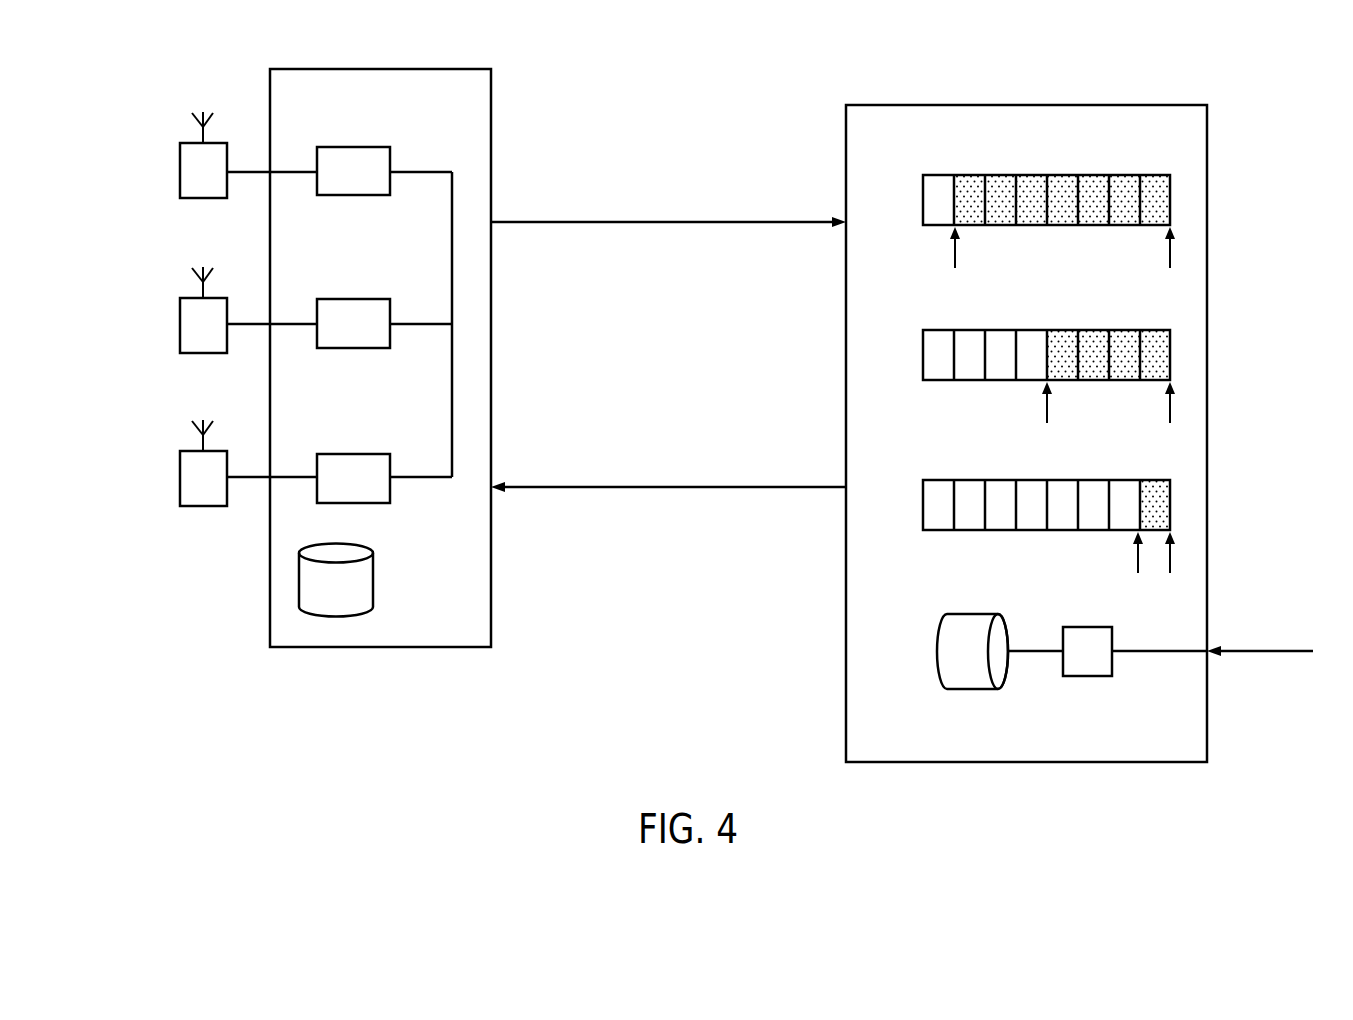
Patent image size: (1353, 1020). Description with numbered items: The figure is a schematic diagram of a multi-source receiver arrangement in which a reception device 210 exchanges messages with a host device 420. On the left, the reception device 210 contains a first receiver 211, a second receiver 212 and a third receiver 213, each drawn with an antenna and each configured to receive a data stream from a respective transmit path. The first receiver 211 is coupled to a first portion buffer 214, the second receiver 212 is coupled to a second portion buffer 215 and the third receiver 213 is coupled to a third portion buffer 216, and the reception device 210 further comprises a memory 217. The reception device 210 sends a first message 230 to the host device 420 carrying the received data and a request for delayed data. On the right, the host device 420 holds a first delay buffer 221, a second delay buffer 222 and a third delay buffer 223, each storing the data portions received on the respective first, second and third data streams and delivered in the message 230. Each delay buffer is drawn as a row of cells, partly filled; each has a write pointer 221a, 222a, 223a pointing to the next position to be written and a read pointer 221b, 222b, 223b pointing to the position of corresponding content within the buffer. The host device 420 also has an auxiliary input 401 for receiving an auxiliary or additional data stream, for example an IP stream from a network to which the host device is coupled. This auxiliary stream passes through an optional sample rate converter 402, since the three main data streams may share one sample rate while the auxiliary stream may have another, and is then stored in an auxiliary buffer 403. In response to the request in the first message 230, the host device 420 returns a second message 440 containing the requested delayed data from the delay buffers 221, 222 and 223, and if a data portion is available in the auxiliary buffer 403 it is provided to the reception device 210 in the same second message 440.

The reception device 210 is at (380, 69).
The first receiver 211 is at (180, 172).
The second receiver 212 is at (180, 324).
The third receiver 213 is at (180, 477).
The first portion buffer 214 is at (353, 147).
The second portion buffer 215 is at (373, 280).
The third portion buffer 216 is at (373, 435).
The memory 217 is at (297, 582).
The first message 230 is at (795, 220).
The second message 440 is at (728, 489).
The host device 420 is at (1028, 86).
The first delay buffer 221 is at (1068, 156).
The write pointer of first delay buffer 221a is at (950, 252).
The read pointer of first delay buffer 221b is at (1175, 258).
The second delay buffer 222 is at (1068, 311).
The write pointer of second delay buffer 222a is at (1043, 405).
The read pointer of second delay buffer 222b is at (1175, 408).
The third delay buffer 223 is at (1068, 461).
The write pointer of third delay buffer 223a is at (1135, 555).
The read pointer of third delay buffer 223b is at (1175, 558).
The auxiliary input 401 is at (1258, 654).
The sample rate converter 402 is at (1088, 677).
The auxiliary buffer 403 is at (975, 690).